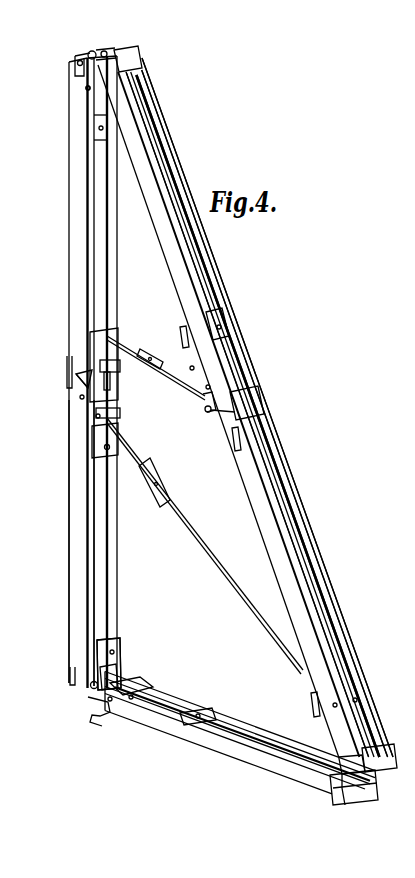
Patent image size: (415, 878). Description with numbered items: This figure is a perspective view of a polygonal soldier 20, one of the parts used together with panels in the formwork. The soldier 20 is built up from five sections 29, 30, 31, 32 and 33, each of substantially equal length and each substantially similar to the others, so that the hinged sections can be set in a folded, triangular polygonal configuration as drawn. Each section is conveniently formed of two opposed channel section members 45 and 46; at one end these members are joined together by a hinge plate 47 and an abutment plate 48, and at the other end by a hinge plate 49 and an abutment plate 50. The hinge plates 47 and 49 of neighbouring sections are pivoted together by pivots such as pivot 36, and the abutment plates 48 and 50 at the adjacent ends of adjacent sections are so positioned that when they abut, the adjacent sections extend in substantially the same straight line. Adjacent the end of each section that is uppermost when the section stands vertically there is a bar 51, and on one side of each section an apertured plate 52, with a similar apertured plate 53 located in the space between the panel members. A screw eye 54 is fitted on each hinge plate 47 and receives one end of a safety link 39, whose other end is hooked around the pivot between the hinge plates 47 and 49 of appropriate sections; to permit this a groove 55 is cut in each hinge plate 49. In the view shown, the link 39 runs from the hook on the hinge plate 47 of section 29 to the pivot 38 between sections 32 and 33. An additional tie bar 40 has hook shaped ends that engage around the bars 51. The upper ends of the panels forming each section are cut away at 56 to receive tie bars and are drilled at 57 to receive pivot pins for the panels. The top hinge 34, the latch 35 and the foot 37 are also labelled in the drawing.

The soldier 20 is at (285, 437).
The section 29 is at (69, 136).
The section 30 is at (69, 526).
The section 31 is at (208, 743).
The section 32 is at (308, 532).
The section 33 is at (170, 143).
The top hinge 34 is at (112, 48).
The latch 35 is at (80, 374).
The pivot 36 is at (91, 687).
The foot 37 is at (348, 803).
The pivot 38 is at (206, 412).
The safety link 39 is at (135, 354).
The tie bar 40 is at (221, 567).
The channel section member 45 is at (130, 100).
The channel section member 46 is at (138, 128).
The hinge plate 47 is at (95, 347).
The abutment plate 48 is at (70, 680).
The hinge plate 49 is at (118, 378).
The abutment plate 50 is at (98, 713).
The bar 51 is at (97, 420).
The apertured plate 52 is at (97, 457).
The apertured plate 53 is at (220, 326).
The screw eye 54 is at (122, 645).
The groove 55 is at (110, 388).
The cut away 56 is at (78, 71).
The drilled hole 57 is at (86, 89).